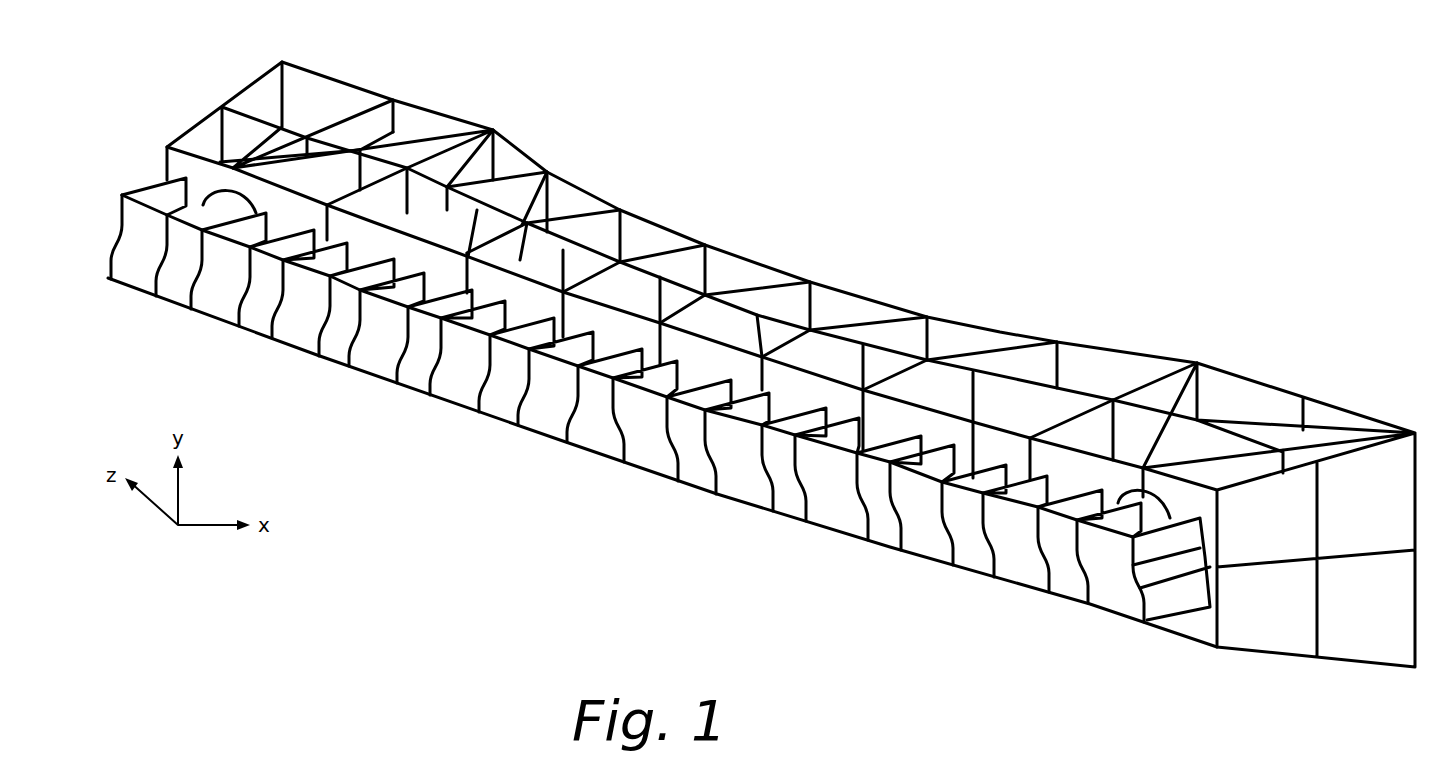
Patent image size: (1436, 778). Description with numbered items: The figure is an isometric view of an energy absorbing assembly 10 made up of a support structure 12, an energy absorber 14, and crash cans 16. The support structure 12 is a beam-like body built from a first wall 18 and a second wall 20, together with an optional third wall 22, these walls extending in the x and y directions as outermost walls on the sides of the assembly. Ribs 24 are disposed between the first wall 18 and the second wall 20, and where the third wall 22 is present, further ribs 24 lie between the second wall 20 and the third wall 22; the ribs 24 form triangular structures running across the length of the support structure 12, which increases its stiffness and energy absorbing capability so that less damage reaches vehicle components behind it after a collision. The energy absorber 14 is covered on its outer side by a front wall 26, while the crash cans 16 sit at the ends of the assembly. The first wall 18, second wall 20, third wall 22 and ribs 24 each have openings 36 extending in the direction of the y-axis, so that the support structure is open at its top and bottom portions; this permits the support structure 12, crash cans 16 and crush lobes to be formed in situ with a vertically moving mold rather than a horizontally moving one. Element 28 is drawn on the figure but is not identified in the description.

The energy absorbing assembly 10 is at (866, 145).
The support structure 12 is at (612, 190).
The energy absorber 14 is at (645, 503).
The crash can 16 is at (342, 82).
The first wall 18 is at (933, 407).
The second wall 20 is at (812, 305).
The third wall 22 is at (1097, 342).
The ribs 24 is at (737, 290).
The front wall 26 is at (462, 368).
The end fitting 28 is at (1020, 490).
The openings 36 is at (648, 238).